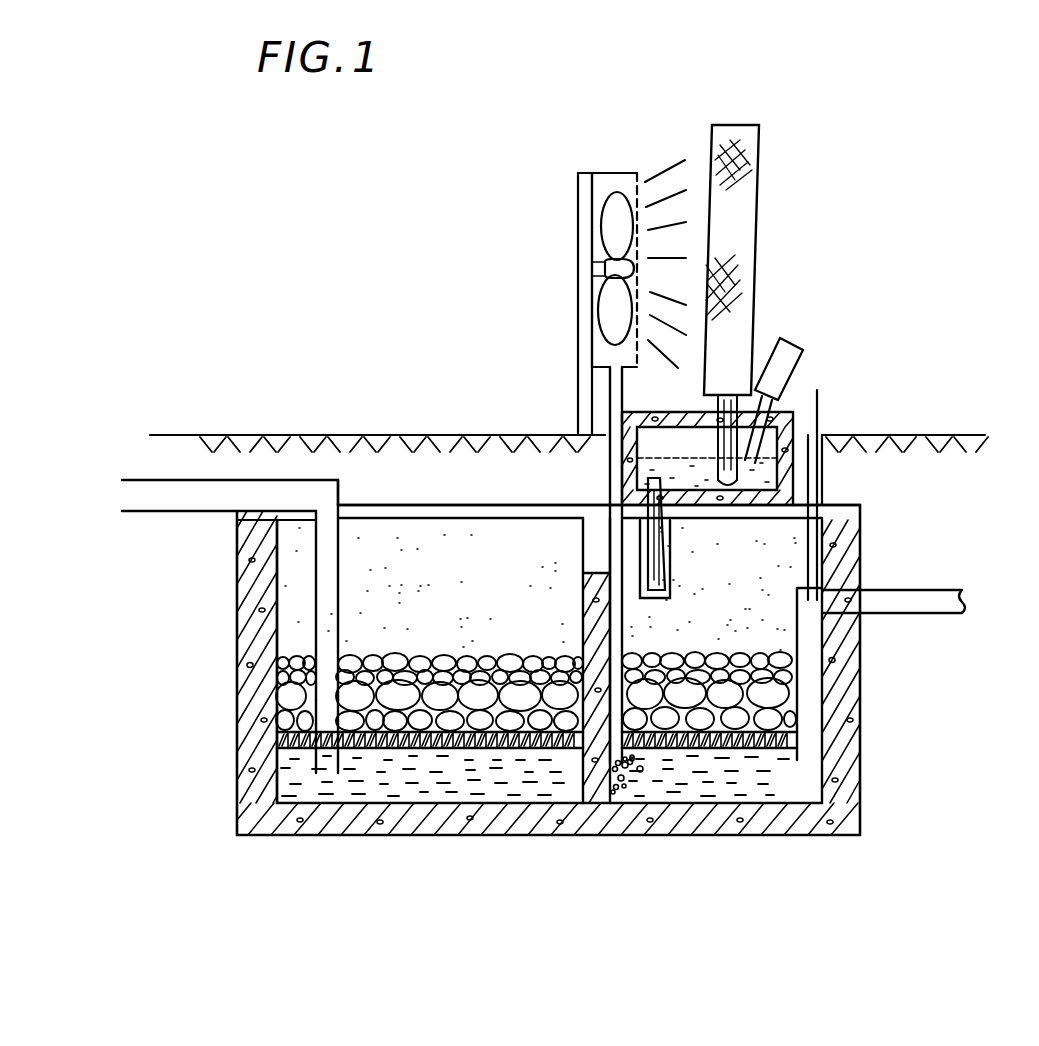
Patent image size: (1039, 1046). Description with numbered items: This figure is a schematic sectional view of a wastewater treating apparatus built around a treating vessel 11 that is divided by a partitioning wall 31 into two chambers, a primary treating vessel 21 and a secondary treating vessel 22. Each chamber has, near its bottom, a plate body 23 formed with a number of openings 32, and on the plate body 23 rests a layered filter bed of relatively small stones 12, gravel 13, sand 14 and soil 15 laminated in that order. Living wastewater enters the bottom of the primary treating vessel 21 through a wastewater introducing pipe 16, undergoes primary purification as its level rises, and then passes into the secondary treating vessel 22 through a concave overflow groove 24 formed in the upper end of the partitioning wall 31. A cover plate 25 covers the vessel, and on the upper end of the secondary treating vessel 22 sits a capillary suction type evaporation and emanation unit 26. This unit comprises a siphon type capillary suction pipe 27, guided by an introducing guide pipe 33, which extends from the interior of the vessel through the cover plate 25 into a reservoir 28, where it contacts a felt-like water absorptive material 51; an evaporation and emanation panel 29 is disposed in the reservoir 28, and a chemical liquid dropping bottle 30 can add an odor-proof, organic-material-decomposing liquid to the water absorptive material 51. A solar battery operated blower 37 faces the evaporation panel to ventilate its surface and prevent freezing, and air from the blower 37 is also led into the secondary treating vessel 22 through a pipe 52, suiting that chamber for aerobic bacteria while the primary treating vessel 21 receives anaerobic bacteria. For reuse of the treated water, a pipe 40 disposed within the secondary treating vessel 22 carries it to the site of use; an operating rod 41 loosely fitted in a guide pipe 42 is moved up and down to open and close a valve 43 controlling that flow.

The treating vessel 11 is at (845, 775).
The relatively small stones 12 is at (478, 720).
The gravel 13 is at (380, 685).
The sand 14 is at (360, 572).
The soil 15 is at (400, 530).
The wastewater introducing pipe 16 is at (165, 510).
The primary treating vessel 21 is at (470, 589).
The secondary treating vessel 22 is at (730, 637).
The plate body 23 is at (362, 752).
The concave overflow groove 24 is at (597, 535).
The cover plate 25 is at (447, 510).
The capillary suction type evaporation and emanation unit 26 is at (768, 315).
The siphon type capillary suction pipe 27 is at (657, 543).
The reservoir 28 is at (795, 430).
The evaporation and emanation panel 29 is at (735, 225).
The chemical liquid dropping bottle 30 is at (790, 365).
The partitioning wall 31 is at (572, 742).
The openings 32 is at (690, 745).
The introducing guide pipe 33 is at (668, 590).
The solar battery operated blower 37 is at (615, 185).
The pipe 40 is at (935, 600).
The operating rod 41 is at (822, 406).
The guide pipe 42 is at (830, 548).
The valve 43 is at (815, 600).
The water absorptive material 51 is at (800, 482).
The pipe 52 is at (622, 400).